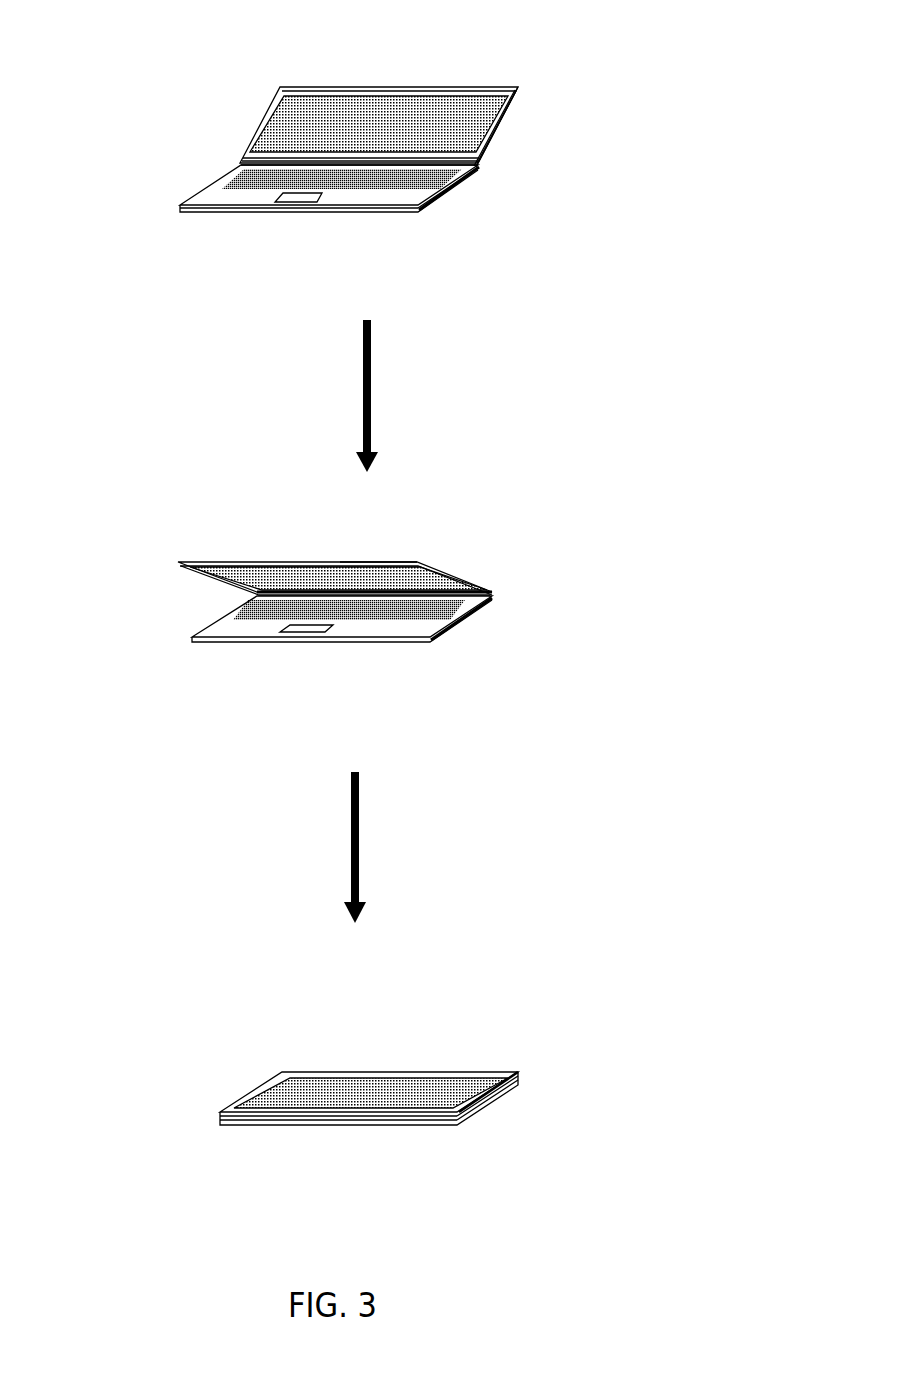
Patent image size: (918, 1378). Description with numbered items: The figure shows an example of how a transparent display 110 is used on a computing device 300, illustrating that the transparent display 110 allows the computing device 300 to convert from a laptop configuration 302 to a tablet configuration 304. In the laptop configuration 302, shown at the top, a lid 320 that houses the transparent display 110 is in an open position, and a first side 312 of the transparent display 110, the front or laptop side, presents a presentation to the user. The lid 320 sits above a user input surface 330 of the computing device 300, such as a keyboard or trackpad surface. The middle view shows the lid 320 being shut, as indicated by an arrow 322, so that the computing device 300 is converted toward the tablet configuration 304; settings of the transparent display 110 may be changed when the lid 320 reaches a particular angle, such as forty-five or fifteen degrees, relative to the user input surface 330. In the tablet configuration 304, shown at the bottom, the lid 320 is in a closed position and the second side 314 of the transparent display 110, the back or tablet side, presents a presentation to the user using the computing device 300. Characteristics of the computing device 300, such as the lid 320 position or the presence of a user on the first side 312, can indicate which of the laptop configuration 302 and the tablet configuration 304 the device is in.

The transparent display 110 is at (373, 566).
The computing device 300 is at (273, 671).
The laptop configuration 302 is at (754, 69).
The tablet configuration 304 is at (694, 1047).
The first side 312 is at (162, 326).
The second side 314 is at (550, 593).
The lid 320 is at (358, 562).
The arrow 322 is at (414, 556).
The user input surface 330 is at (420, 446).